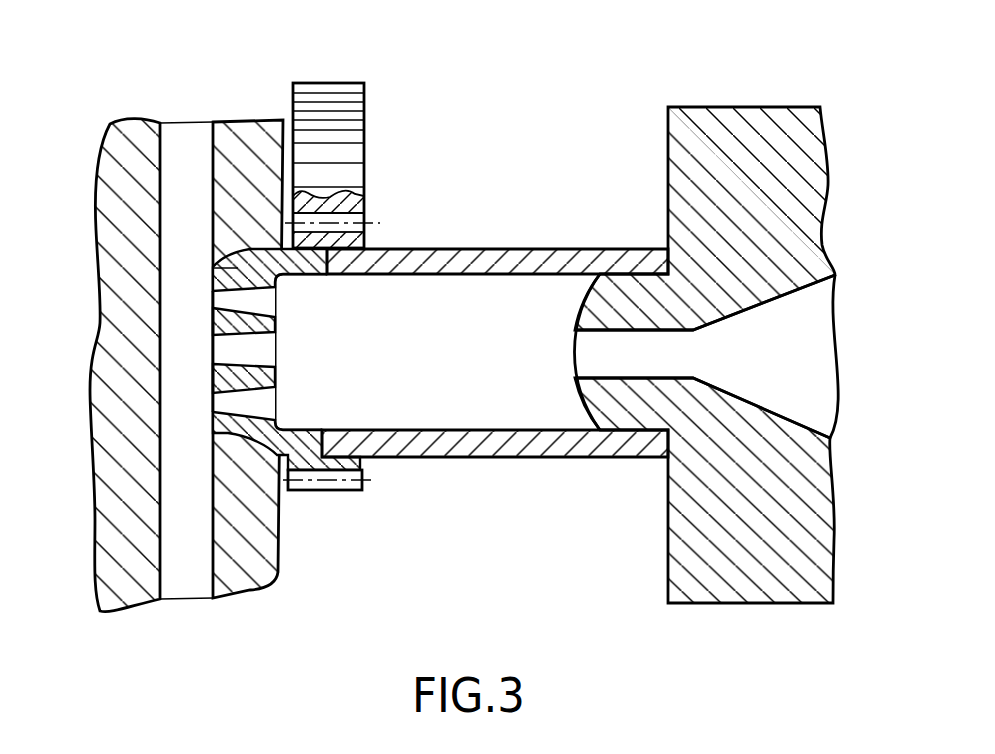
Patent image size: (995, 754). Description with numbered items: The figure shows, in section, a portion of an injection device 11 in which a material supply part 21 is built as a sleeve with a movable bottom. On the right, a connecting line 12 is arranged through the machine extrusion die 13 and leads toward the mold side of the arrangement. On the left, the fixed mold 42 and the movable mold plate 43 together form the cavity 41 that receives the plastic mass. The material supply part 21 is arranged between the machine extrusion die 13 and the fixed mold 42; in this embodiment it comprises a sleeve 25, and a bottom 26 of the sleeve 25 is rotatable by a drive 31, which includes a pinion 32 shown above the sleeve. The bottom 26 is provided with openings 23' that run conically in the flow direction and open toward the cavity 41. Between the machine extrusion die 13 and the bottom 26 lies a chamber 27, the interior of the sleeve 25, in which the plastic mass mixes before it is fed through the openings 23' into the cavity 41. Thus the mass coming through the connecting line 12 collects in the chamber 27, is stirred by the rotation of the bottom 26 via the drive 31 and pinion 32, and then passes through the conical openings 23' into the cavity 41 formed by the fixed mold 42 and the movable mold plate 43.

The injection device 11 is at (851, 372).
The connecting line 12 is at (835, 287).
The machine extrusion die 13 is at (622, 417).
The material supply part 21 is at (397, 458).
The openings 23' is at (274, 351).
The sleeve 25 is at (468, 255).
The bottom 26 is at (277, 322).
The chamber 27 is at (481, 399).
The drive 31 is at (330, 74).
The pinion 32 is at (358, 131).
The cavity 41 is at (197, 132).
The fixed mold 42 is at (227, 128).
The movable mold plate 43 is at (112, 135).